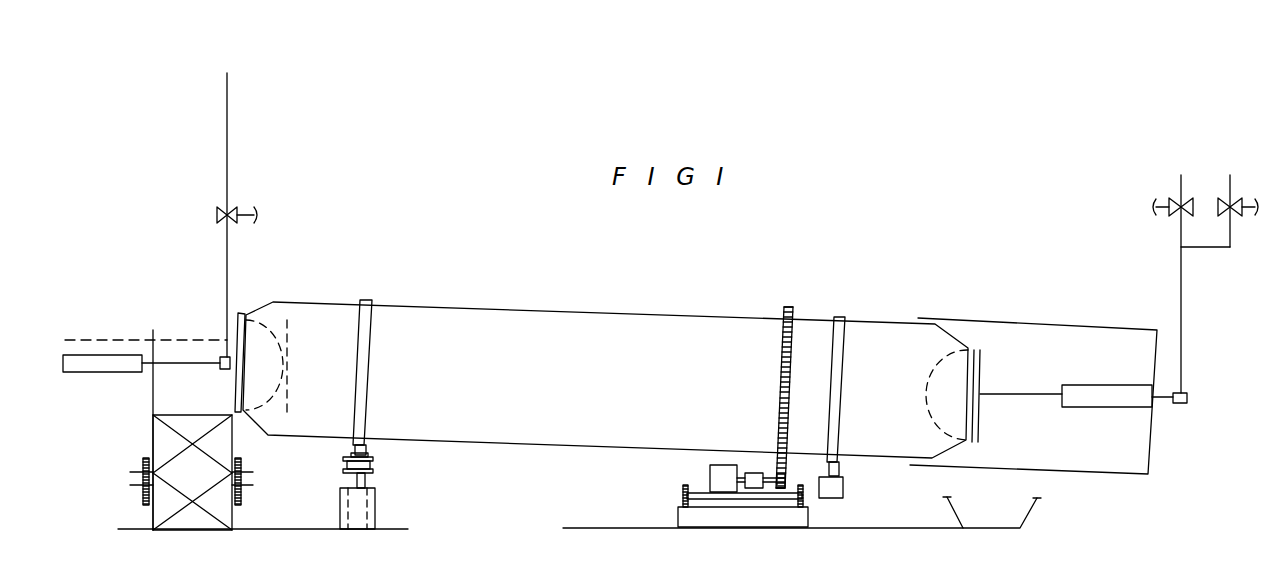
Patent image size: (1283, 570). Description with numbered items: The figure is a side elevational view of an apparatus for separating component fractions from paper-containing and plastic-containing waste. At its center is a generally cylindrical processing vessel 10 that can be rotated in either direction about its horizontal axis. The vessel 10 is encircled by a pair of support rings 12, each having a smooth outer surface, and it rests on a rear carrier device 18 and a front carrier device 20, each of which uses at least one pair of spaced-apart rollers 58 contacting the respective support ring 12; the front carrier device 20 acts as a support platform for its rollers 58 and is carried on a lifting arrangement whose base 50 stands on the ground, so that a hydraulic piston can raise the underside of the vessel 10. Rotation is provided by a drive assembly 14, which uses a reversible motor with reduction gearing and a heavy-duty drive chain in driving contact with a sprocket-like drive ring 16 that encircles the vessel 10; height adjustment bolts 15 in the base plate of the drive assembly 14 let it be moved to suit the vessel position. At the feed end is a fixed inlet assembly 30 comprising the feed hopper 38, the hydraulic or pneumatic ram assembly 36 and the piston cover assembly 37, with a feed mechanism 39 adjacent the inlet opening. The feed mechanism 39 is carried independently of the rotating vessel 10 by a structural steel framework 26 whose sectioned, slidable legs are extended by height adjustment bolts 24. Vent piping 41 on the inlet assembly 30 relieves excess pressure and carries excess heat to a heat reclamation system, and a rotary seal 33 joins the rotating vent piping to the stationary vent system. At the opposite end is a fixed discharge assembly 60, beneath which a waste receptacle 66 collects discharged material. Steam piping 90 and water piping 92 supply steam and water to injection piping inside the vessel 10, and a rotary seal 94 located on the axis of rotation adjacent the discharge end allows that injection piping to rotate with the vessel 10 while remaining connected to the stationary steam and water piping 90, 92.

The processing vessel 10 is at (683, 272).
The support rings 12 is at (367, 300).
The drive assembly 14 is at (710, 515).
The height adjustment bolts 15 is at (683, 494).
The drive ring 16 is at (795, 308).
The rear carrier device 18 is at (833, 492).
The front carrier device 20 is at (368, 472).
The height adjustment bolts 24 is at (145, 498).
The structural steel framework 26 is at (157, 438).
The inlet assembly 30 is at (241, 314).
The rotary seal 33 is at (221, 357).
The ram assembly 36 is at (90, 366).
The piston cover assembly 37 is at (176, 340).
The feed hopper 38 is at (160, 390).
The feed mechanism 39 is at (114, 294).
The vent piping 41 is at (232, 114).
The pier 50 is at (371, 520).
The rollers 58 is at (366, 448).
The discharge assembly 60 is at (977, 350).
The waste receptacle 66 is at (1034, 511).
The steam piping 90 is at (1232, 178).
The water piping 92 is at (1183, 180).
The rotary seal 94 is at (1188, 396).